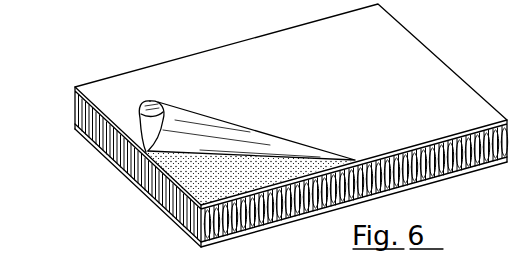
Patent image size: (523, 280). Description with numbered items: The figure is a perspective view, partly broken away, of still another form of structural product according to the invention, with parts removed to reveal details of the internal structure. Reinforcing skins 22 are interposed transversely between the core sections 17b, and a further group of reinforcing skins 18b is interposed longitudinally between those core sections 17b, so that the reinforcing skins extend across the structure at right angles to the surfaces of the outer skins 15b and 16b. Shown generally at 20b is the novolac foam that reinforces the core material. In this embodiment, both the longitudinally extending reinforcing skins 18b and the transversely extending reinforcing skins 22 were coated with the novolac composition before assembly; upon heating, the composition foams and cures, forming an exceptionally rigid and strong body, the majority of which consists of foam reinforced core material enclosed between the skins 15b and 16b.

The skin 15b is at (218, 58).
The novolac foam 20b is at (83, 114).
The reinforcing skins extending longitudinally 18b is at (112, 142).
The skin 16b is at (145, 186).
The core sections 17b is at (185, 218).
The reinforcing skins 22 is at (230, 236).